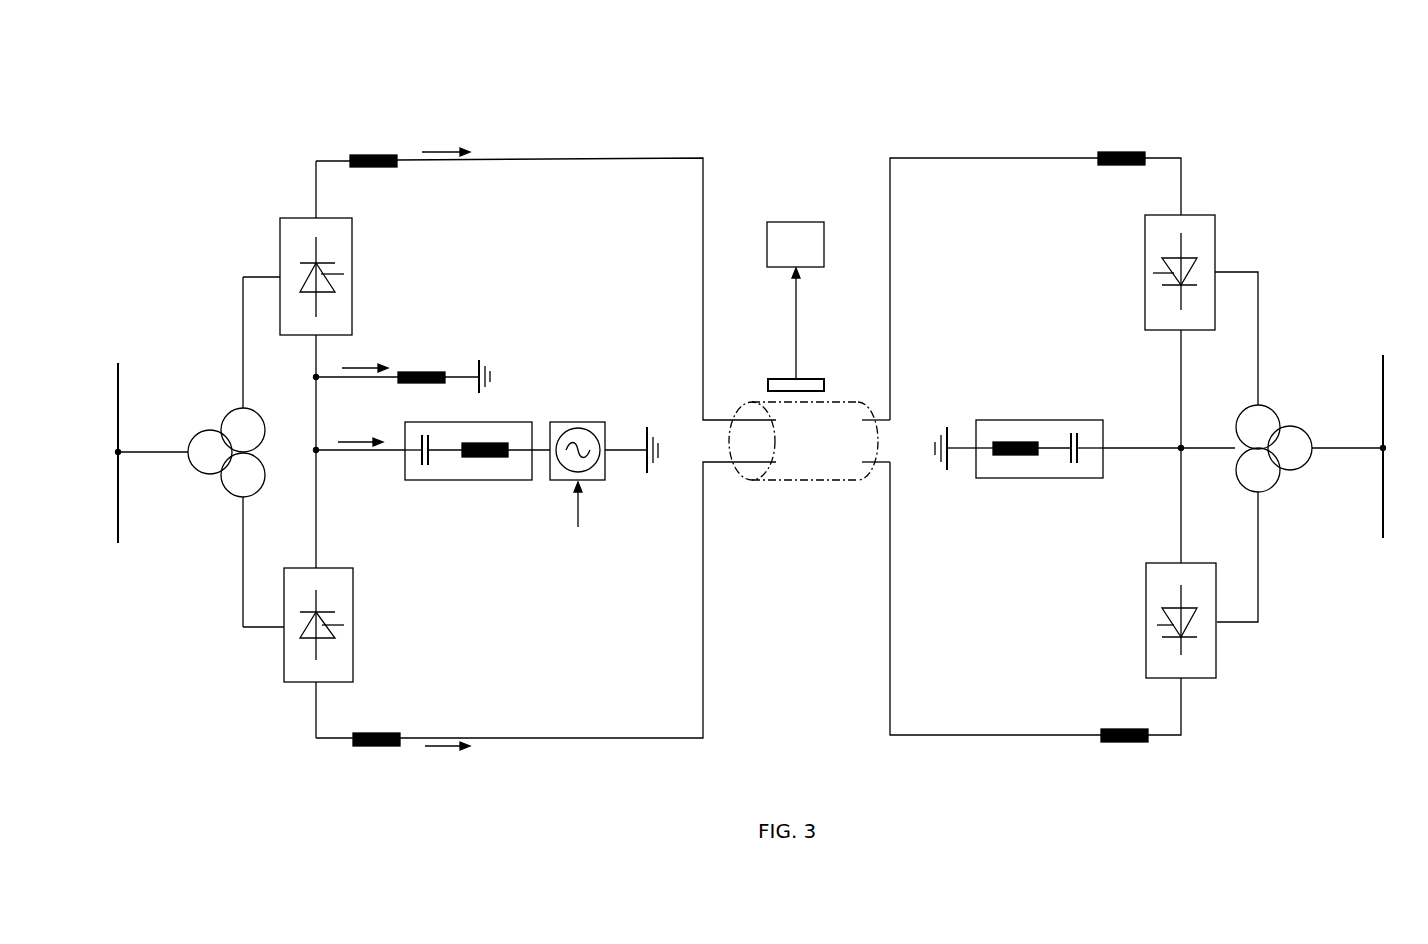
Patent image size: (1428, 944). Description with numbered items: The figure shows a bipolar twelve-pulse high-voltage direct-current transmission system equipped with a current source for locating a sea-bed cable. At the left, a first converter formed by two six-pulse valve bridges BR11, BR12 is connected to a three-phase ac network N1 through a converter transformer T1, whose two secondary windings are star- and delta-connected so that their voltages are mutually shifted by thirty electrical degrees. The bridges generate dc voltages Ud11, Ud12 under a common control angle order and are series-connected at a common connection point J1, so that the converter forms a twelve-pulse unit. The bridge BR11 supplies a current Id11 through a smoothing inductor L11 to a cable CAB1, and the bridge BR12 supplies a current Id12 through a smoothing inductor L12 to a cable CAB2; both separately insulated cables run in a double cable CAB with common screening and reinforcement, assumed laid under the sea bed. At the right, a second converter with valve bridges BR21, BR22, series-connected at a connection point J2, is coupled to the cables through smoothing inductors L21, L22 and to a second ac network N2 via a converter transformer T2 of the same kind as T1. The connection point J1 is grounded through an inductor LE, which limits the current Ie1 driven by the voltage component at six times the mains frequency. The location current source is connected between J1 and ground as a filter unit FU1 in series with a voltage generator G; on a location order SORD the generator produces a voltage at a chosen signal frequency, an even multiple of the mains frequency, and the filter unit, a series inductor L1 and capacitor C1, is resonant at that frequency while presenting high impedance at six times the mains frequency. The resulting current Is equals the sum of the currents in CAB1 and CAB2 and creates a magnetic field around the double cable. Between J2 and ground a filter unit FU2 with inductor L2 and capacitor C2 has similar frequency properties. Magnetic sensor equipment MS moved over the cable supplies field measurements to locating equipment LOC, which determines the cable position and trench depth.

The three-phase electric ac network N1 is at (118, 503).
The converter transformer T1 is at (200, 400).
The six-pulse valve bridge BR11 is at (280, 233).
The dc voltage Ud11 is at (383, 275).
The smoothing inductor L11 is at (378, 155).
The current Id11 is at (444, 142).
The inductor LE is at (428, 370).
The current Ie1 is at (362, 359).
The connection point J1 is at (318, 452).
The current Is is at (359, 431).
The filter unit FU1 is at (481, 442).
The capacitor C1 is at (430, 462).
The inductor L1 is at (493, 458).
The voltage generator G is at (593, 420).
The location order SORD is at (576, 520).
The six-pulse valve bridge BR12 is at (284, 665).
The dc voltage Ud12 is at (384, 623).
The smoothing inductor L12 is at (380, 747).
The current Id12 is at (445, 758).
The locating equipment LOC is at (778, 222).
The magnetic sensor equipment MS is at (783, 378).
The double cable CAB is at (785, 483).
The cable CAB1 is at (870, 418).
The cable CAB2 is at (845, 463).
The smoothing inductor L21 is at (1118, 152).
The smoothing inductor L22 is at (1122, 743).
The six-pulse valve bridge BR21 is at (1217, 228).
The six-pulse valve bridge BR22 is at (1217, 660).
The connection point J2 is at (1183, 450).
The filter unit FU2 is at (1019, 439).
The inductor L2 is at (1000, 455).
The capacitor C2 is at (1067, 458).
The converter transformer T2 is at (1288, 418).
The three-phase electric ac network N2 is at (1385, 497).